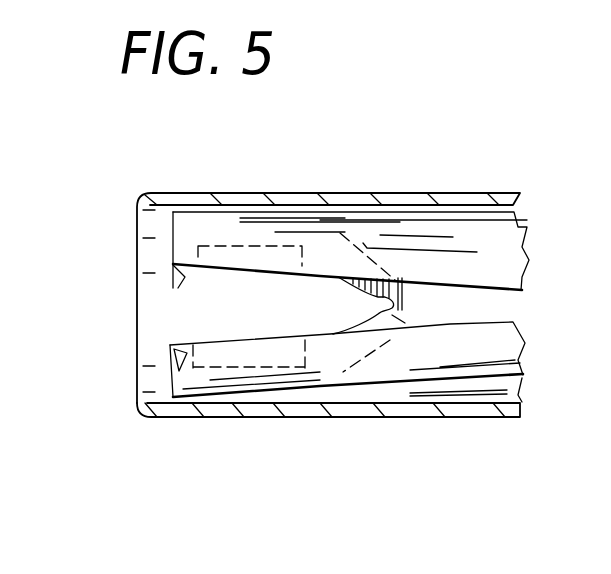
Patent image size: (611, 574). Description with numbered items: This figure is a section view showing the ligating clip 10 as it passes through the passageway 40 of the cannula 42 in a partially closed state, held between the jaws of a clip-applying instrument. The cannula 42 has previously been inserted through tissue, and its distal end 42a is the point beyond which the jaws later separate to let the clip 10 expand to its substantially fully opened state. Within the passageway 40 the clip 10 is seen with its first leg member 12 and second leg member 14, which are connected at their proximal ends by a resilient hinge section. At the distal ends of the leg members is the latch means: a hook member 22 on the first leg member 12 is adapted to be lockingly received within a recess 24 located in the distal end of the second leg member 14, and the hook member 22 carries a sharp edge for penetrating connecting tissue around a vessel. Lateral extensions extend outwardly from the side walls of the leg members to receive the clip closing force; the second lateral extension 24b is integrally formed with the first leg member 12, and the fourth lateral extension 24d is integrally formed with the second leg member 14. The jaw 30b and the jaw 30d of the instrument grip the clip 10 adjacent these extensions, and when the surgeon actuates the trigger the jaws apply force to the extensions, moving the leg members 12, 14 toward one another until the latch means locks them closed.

The ligating clip 10 is at (385, 278).
The first leg member 12 is at (243, 204).
The second leg member 14 is at (305, 370).
The hook member 22 is at (176, 279).
The recess 24 is at (167, 365).
The second lateral extension 24b is at (209, 276).
The fourth lateral extension 24d is at (259, 336).
The jaw 30b is at (398, 230).
The jaw 30d is at (487, 340).
The passageway 40 is at (350, 396).
The cannula 42 is at (480, 420).
The distal end of the cannula 42a is at (226, 410).